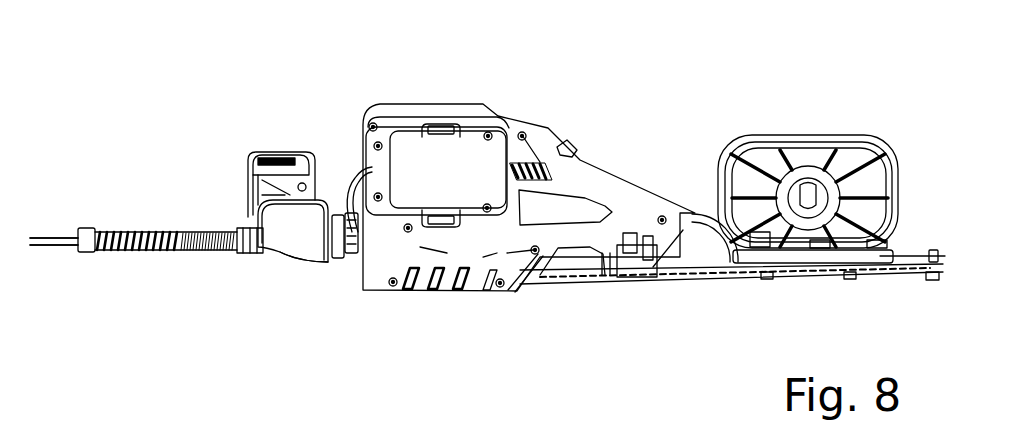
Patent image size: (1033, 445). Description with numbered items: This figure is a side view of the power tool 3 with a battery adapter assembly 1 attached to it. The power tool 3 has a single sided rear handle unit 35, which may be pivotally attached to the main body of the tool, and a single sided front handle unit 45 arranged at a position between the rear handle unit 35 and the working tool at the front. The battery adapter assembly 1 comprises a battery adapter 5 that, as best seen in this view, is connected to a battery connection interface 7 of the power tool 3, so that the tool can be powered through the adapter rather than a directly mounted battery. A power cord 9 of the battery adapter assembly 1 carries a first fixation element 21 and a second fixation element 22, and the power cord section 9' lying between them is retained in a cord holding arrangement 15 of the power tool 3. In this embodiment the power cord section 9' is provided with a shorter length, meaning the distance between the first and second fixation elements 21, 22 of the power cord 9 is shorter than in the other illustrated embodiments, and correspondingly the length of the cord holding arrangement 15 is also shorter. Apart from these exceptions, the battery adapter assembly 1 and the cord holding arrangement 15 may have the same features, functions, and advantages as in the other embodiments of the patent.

The battery adapter assembly 1 is at (147, 127).
The power tool 3 is at (611, 125).
The battery adapter 5 is at (433, 170).
The battery connection interface 7 is at (503, 130).
The power cord 9 is at (146, 216).
The power cord section 9' is at (352, 275).
The cord holding arrangement 15 is at (333, 200).
The first fixation element 21 is at (360, 178).
The second fixation element 22 is at (320, 272).
The single sided rear handle unit 35 is at (277, 248).
The single sided front handle unit 45 is at (817, 190).